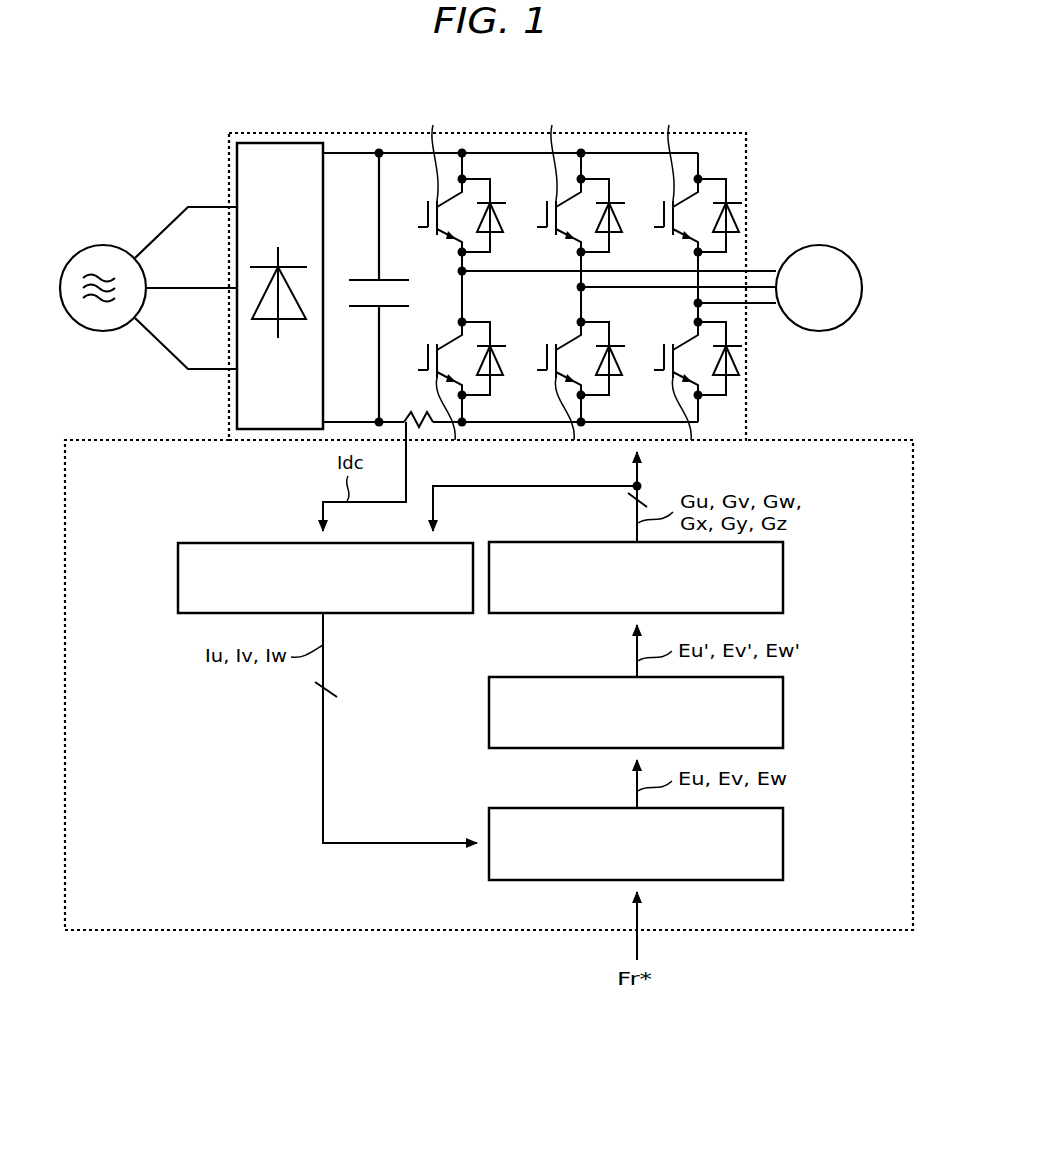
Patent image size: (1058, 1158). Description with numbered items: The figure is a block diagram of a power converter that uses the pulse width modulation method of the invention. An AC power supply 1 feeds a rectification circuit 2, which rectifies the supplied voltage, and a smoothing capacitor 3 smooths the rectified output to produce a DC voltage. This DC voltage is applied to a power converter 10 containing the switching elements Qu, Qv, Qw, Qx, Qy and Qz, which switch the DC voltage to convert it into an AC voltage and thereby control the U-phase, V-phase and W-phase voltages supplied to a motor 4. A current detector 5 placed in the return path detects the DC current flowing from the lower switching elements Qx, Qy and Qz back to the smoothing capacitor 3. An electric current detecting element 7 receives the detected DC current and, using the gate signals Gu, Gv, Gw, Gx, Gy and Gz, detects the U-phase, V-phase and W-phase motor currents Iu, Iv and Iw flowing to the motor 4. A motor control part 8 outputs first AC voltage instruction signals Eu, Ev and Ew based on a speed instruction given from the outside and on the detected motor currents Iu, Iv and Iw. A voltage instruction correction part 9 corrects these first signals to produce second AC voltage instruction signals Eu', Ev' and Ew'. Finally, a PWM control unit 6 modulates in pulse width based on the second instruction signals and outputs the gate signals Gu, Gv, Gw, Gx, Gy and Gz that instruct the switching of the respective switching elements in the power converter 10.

The AC power supply 1 is at (105, 246).
The rectification circuit 2 is at (286, 143).
The smoothing capacitor 3 is at (355, 280).
The motor 4 is at (817, 245).
The current detector 5 is at (418, 432).
The PWM control unit 6 is at (784, 572).
The electric current detecting element 7 is at (178, 567).
The motor control part 8 is at (784, 841).
The voltage instruction correction part 9 is at (784, 710).
The power converter 10 is at (727, 133).